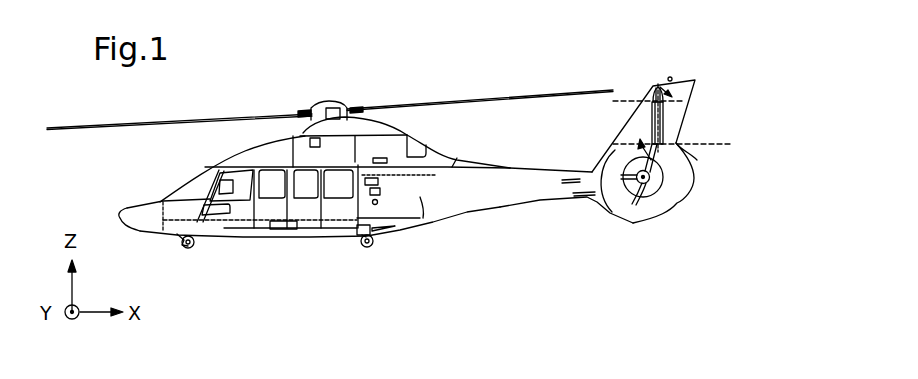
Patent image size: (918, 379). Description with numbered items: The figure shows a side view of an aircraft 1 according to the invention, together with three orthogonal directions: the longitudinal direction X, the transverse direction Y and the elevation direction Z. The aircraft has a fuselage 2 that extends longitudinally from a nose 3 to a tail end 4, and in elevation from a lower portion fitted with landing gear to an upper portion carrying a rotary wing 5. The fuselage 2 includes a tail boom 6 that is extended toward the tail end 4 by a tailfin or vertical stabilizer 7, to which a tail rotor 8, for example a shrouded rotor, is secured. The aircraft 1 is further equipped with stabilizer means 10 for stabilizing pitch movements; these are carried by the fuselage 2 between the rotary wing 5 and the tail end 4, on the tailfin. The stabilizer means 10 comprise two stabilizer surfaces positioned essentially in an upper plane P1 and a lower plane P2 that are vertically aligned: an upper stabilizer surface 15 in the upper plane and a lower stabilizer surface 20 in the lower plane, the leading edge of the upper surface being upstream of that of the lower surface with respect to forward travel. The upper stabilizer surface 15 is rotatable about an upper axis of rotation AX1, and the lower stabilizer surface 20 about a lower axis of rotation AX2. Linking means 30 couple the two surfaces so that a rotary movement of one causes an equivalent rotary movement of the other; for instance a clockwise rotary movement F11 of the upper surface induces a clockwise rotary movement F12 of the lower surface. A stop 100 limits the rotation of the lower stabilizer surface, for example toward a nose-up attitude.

The aircraft 1 is at (511, 295).
The fuselage 2 is at (478, 208).
The nose 3 is at (120, 218).
The tail end 4 is at (714, 199).
The rotary wing 5 is at (340, 82).
The tail boom 6 is at (545, 198).
The tailfin or vertical stabilizer 7 is at (670, 122).
The tail rotor 8 is at (629, 206).
The stabilizer means 10 is at (635, 130).
The upper stabilizer surface 15 is at (660, 87).
The lower stabilizer surface 20 is at (677, 143).
The linking means 30 is at (676, 111).
The stop 100 is at (645, 173).
The upper plane P1 is at (628, 101).
The lower plane P2 is at (730, 144).
The upper axis of rotation AX1 is at (658, 86).
The lower axis of rotation AX2 is at (656, 184).
The clockwise rotary movement of the upper stabilizer surface F11 is at (625, 101).
The clockwise rotary movement of the lower stabilizer surface F12 is at (763, 208).